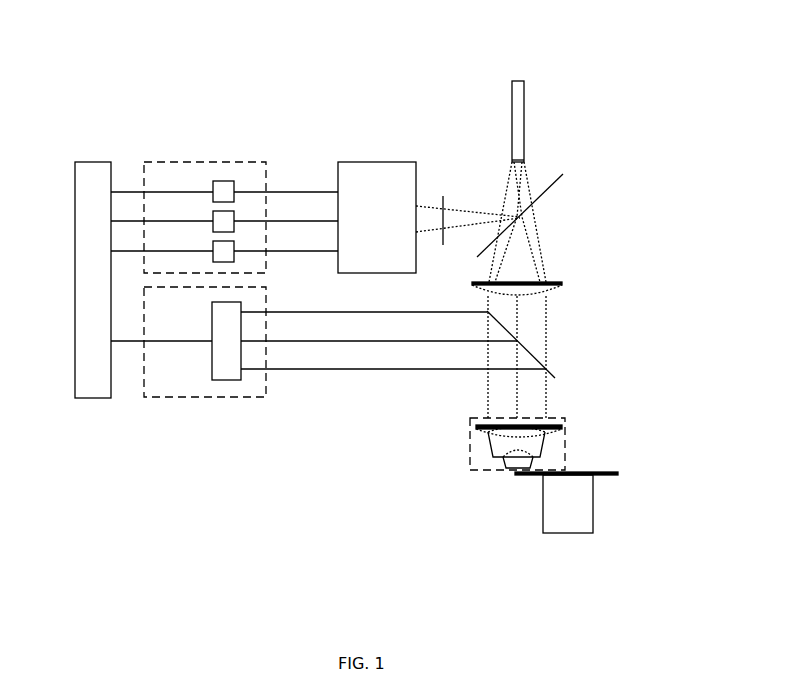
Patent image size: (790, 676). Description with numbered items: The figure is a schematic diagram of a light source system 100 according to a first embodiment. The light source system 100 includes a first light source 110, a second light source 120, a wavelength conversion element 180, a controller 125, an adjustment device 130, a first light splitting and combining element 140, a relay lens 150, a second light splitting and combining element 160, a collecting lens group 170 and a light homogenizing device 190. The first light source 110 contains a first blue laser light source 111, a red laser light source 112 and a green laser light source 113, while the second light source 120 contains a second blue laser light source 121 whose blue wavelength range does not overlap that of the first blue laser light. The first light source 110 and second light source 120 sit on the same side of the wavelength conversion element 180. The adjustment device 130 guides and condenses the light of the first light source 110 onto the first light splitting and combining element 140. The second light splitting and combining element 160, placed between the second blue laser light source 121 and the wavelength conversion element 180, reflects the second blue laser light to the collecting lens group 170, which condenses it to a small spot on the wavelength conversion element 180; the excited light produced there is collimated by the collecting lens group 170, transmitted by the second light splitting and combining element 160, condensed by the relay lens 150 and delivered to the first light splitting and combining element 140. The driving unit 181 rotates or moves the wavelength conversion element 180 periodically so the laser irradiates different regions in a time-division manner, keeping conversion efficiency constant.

The light source system 100 is at (387, 36).
The first light source 110 is at (200, 162).
The first blue laser light source 111 is at (213, 187).
The red laser light source 112 is at (213, 218).
The green laser light source 113 is at (213, 247).
The second light source 120 is at (222, 398).
The second blue laser light source 121 is at (212, 312).
The controller 125 is at (100, 161).
The adjustment device 130 is at (377, 162).
The first light splitting and combining element 140 is at (553, 187).
The relay lens 150 is at (562, 284).
The second light splitting and combining element 160 is at (553, 372).
The collecting lens group 170 is at (566, 440).
The wavelength conversion element 180 is at (605, 474).
The driving unit 181 is at (593, 517).
The light homogenizing device 190 is at (525, 118).